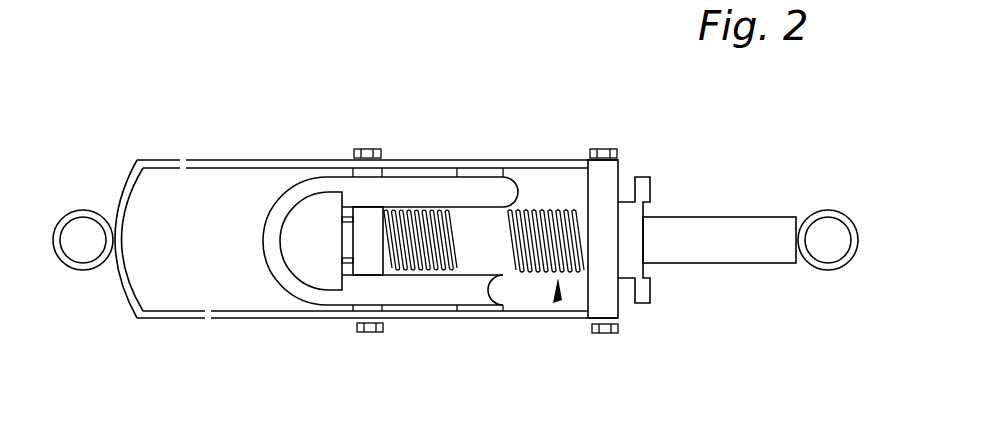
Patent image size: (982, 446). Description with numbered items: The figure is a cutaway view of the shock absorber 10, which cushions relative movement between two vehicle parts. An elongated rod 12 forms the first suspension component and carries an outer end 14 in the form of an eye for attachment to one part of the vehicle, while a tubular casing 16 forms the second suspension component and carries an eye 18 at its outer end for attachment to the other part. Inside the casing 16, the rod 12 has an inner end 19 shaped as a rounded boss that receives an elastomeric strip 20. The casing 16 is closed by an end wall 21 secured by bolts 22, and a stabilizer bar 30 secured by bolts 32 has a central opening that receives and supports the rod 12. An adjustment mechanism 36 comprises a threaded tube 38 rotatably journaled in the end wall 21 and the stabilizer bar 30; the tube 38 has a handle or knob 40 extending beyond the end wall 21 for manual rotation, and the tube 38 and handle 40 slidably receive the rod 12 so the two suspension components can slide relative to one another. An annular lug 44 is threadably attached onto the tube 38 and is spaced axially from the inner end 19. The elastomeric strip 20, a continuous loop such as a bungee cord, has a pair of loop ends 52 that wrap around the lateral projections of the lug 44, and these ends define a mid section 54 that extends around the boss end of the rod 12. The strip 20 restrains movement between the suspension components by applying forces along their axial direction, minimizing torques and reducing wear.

The shock absorber 10 is at (217, 140).
The rod 12 is at (715, 217).
The outer end 14 is at (823, 210).
The tubular casing 16 is at (558, 160).
The eye 18 is at (82, 208).
The inner end 19 is at (310, 275).
The elastomeric strip 20 is at (313, 185).
The end wall 21 is at (610, 300).
The bolts 22 is at (603, 148).
The stabilizer bar 30 is at (386, 306).
The bolts 32 is at (370, 148).
The adjustment mechanism 36 is at (558, 303).
The threaded tube 38 is at (432, 250).
The handle or knob 40 is at (652, 290).
The annular lug 44 is at (470, 223).
The loop ends 52 is at (496, 174).
The mid section 54 is at (261, 262).